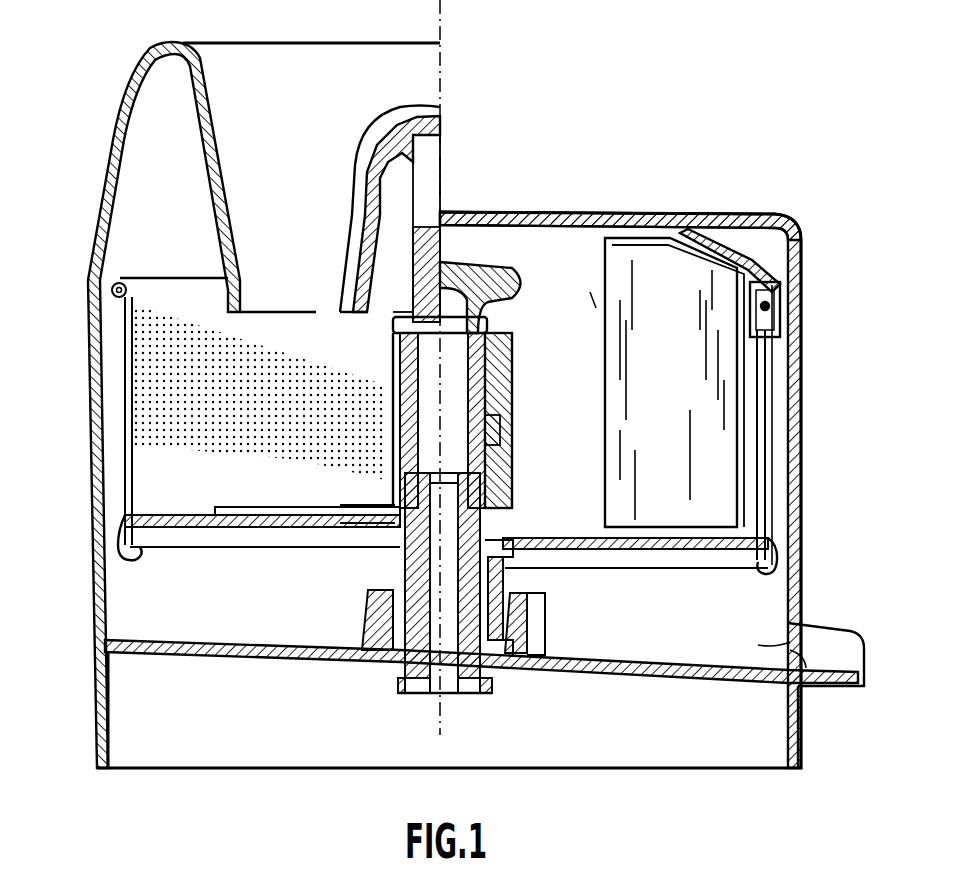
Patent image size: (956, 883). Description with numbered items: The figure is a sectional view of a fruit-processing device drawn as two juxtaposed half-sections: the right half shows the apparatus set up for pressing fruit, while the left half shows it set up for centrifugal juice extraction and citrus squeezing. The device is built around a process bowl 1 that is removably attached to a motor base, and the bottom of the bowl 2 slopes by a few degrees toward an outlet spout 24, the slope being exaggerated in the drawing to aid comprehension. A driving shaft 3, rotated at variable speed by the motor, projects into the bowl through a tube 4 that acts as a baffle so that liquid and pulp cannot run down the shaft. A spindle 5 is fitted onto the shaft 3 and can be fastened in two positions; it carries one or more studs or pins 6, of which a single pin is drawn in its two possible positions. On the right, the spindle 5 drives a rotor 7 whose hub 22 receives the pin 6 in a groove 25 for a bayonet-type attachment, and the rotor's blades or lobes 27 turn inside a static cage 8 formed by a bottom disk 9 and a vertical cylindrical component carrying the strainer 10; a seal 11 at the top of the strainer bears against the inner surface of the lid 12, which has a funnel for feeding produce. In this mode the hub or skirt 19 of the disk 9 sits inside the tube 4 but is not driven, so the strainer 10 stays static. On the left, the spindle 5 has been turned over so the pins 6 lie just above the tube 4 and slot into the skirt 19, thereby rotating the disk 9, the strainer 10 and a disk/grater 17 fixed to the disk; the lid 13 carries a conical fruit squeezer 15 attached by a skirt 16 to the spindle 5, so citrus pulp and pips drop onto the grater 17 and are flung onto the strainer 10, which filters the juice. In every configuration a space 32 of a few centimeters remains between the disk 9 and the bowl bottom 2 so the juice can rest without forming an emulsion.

The process bowl 1 is at (801, 450).
The bottom of the bowl 2 is at (697, 666).
The driving shaft 3 is at (475, 694).
The tube 4 is at (527, 614).
The spindle 5 is at (490, 365).
The studs or pins 6 is at (508, 432).
The rotor 7 is at (676, 360).
The static cage 8 is at (768, 412).
The bottom disk 9 is at (272, 530).
The strainer 10 is at (122, 412).
The seal 11 is at (722, 242).
The lid 12 is at (580, 213).
The lid 13 is at (118, 118).
The conical fruit squeezer 15 is at (392, 106).
The skirt 16 is at (407, 282).
The disk/grater 17 is at (276, 505).
The hub or skirt of the disk 19 is at (507, 577).
The hub of the rotor 22 is at (470, 262).
The outlet spout 24 is at (828, 650).
The groove 25 is at (505, 452).
The blades or lobes 27 is at (590, 310).
The space 32 is at (808, 688).